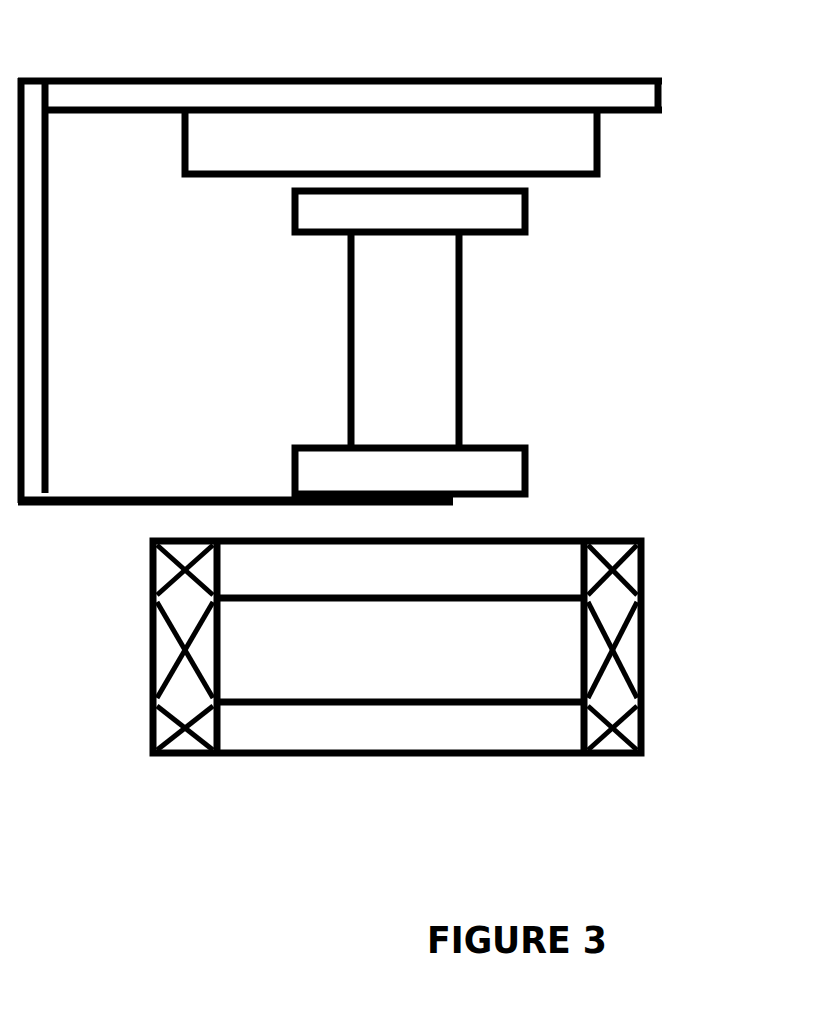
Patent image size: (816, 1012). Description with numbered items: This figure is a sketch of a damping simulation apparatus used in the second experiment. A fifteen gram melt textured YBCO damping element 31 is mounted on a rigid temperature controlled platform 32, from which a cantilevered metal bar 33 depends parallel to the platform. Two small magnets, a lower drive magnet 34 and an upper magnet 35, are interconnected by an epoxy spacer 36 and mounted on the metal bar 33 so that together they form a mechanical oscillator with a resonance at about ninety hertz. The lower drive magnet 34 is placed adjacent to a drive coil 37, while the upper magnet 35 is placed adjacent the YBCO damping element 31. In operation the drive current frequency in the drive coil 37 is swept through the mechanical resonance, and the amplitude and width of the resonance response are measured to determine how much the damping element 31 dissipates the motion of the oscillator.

The melt textured YBCO damping element 31 is at (346, 175).
The rigid temperature controlled platform 32 is at (340, 62).
The cantilevered metal bar 33 is at (235, 290).
The lower drive magnet 34 is at (493, 456).
The upper magnet 35 is at (464, 229).
The epoxy spacer 36 is at (531, 340).
The drive coil 37 is at (767, 677).